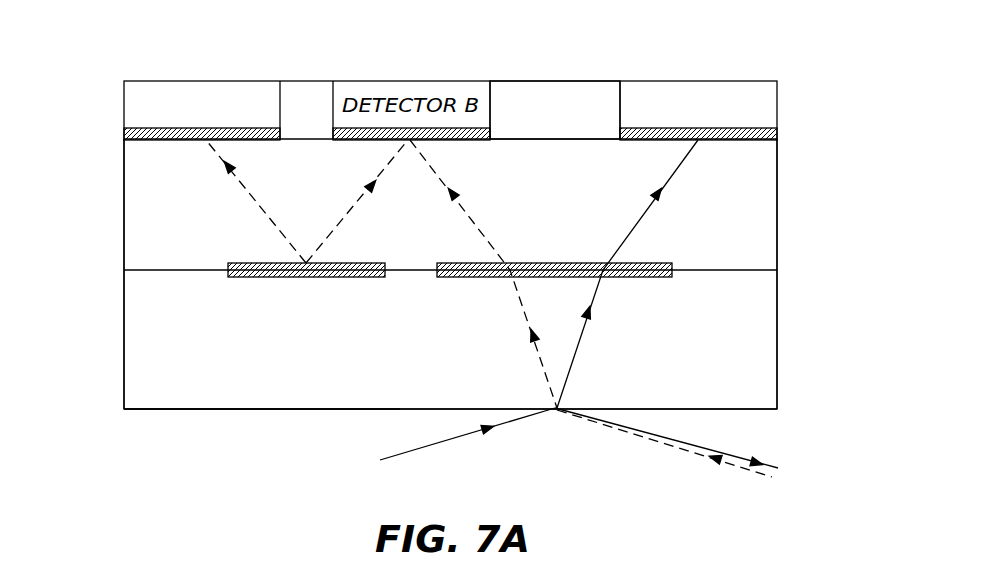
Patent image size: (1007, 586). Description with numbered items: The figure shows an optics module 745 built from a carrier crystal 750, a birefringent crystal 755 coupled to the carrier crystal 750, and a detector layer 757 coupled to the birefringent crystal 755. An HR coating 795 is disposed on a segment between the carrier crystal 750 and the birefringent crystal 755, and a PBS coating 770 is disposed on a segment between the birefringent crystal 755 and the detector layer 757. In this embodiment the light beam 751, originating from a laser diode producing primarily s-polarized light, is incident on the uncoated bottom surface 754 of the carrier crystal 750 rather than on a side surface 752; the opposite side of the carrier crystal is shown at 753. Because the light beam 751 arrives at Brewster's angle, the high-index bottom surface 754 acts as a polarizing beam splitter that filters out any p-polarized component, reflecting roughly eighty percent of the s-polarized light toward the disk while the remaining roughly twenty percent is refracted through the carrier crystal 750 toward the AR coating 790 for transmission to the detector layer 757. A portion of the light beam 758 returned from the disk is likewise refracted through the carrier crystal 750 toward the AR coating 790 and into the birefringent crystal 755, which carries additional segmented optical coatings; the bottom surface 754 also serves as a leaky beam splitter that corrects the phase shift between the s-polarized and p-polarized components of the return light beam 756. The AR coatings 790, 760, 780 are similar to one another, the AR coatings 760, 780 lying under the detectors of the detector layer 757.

The optics module 745 is at (738, 71).
The PBS coating 770 is at (497, 130).
The detector layer 757 is at (603, 115).
The AR coating 760 is at (124, 133).
The AR coating 780 is at (777, 133).
The birefringent crystal 755 is at (758, 257).
The carrier crystal 750 is at (756, 396).
The side surface 752 is at (124, 362).
The right side wall 753 is at (777, 345).
The bottom surface 754 is at (150, 408).
The HR coating 795 is at (245, 278).
The AR coating 790 is at (455, 278).
The light beam 751 is at (443, 443).
The light beam returned from the disk 758 is at (740, 452).
The return light beam 756 is at (730, 466).